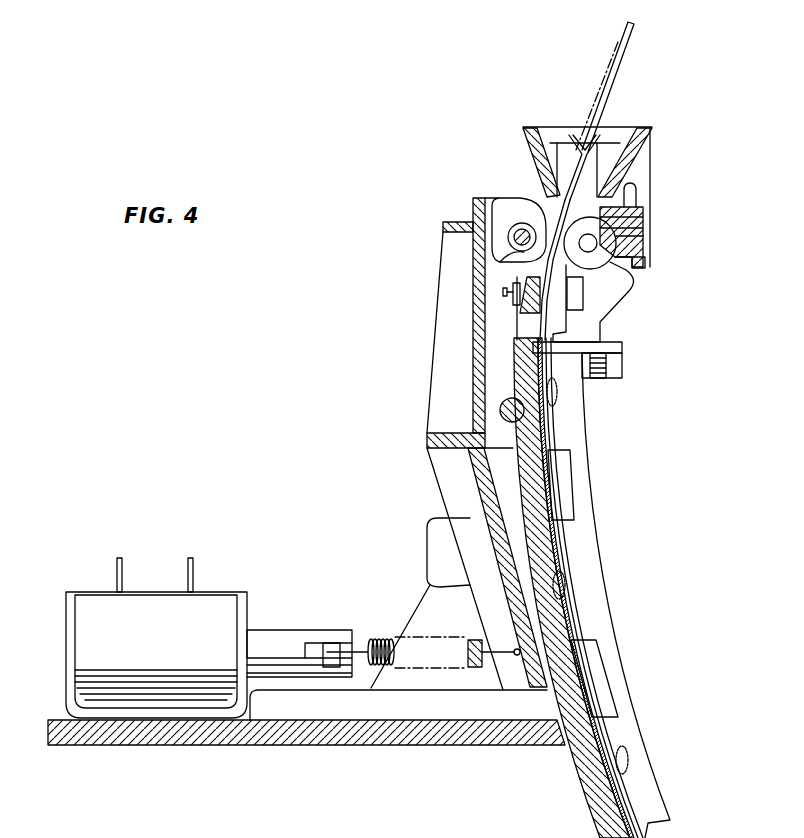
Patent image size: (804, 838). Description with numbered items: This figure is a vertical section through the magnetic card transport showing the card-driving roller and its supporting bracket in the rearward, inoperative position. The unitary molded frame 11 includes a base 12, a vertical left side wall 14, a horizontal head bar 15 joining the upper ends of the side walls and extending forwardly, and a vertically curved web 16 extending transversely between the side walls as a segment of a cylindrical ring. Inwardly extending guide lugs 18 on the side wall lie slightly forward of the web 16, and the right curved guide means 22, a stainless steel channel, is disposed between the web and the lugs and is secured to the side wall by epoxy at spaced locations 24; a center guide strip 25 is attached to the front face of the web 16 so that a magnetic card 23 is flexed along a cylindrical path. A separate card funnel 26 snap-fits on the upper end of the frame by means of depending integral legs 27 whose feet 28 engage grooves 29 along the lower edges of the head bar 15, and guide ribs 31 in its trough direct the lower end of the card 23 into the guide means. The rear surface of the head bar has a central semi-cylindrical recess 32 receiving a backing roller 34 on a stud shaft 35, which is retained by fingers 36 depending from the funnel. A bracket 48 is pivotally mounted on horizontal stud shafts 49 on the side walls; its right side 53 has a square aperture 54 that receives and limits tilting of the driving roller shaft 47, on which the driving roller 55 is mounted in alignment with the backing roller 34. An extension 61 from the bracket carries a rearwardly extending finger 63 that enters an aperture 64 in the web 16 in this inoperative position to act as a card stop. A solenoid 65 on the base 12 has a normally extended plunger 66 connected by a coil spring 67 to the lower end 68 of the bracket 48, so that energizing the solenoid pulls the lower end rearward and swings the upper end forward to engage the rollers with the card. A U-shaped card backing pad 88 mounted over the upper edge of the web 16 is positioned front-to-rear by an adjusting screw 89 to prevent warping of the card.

The frame 11 is at (563, 747).
The base 12 is at (421, 735).
The left side wall 14 is at (624, 743).
The horizontal head bar 15 is at (647, 254).
The vertically curved web 16 is at (546, 626).
The guide lugs 18 is at (590, 666).
The right curved guide means 22 is at (551, 542).
The magnetic card 23 is at (628, 52).
The epoxy locations 24 is at (566, 583).
The center guide strip 25 is at (546, 492).
The card funnel 26 is at (649, 125).
The depending integral legs 27 is at (642, 197).
The feet 28 is at (646, 268).
The grooves 29 is at (620, 271).
The guide ribs 31 is at (551, 140).
The central semi-cylindrical recess 32 is at (641, 216).
The backing roller 34 is at (618, 291).
The stud shaft 35 is at (642, 236).
The fingers 36 is at (642, 223).
The driving roller shaft 47 is at (514, 241).
The bracket 48 is at (455, 381).
The horizontal stud shafts 49 is at (504, 414).
The right side of bracket 53 is at (452, 246).
The square aperture 54 is at (507, 200).
The driving roller 55 is at (520, 253).
The extension 61 is at (600, 370).
The rearwardly extending finger 63 is at (578, 362).
The aperture 64 is at (520, 337).
The solenoid 65 is at (150, 610).
The plunger 66 is at (285, 637).
The coil spring 67 is at (375, 637).
The lower end of bracket 68 is at (471, 541).
The U-shaped card backing pad 88 is at (508, 289).
The adjusting screw 89 is at (508, 300).